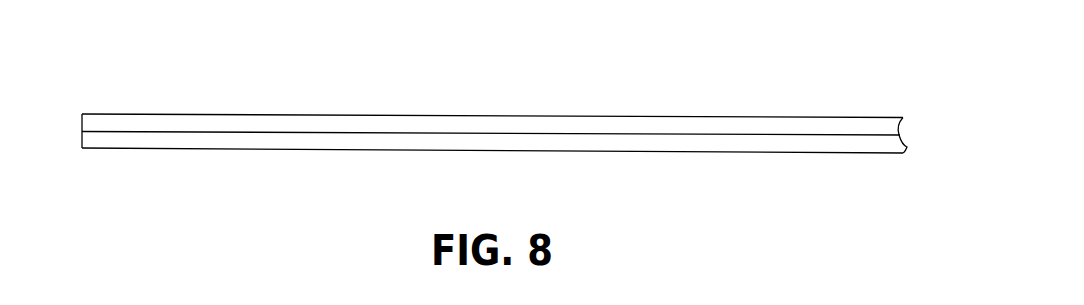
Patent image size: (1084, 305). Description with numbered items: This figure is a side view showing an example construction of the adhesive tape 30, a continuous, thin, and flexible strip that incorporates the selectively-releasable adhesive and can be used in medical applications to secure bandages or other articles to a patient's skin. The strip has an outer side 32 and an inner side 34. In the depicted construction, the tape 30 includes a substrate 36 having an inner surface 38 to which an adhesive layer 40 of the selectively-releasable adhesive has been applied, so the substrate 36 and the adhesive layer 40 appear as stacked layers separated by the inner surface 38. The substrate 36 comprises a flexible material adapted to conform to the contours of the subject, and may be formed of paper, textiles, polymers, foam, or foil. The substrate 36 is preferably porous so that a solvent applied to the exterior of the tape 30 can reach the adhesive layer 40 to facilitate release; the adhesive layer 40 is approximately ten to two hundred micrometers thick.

The adhesive tape 30 is at (699, 74).
The outer side 32 is at (463, 150).
The inner side 34 is at (500, 115).
The substrate 36 is at (261, 140).
The inner surface 38 is at (377, 132).
The adhesive layer 40 is at (301, 123).